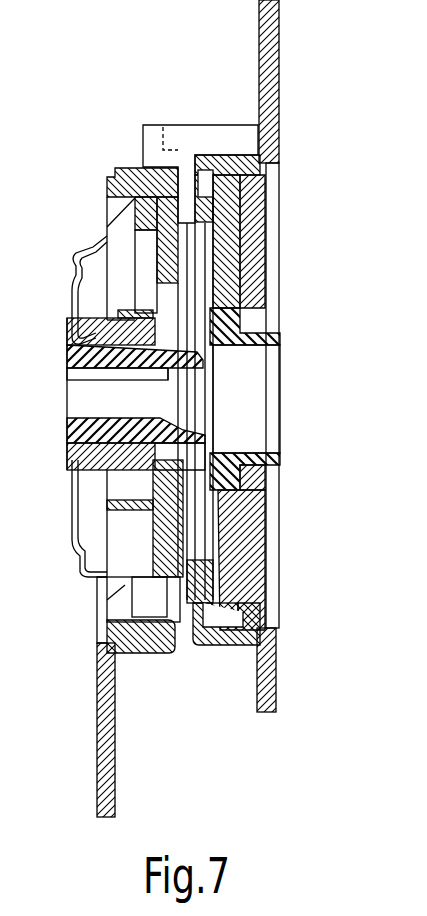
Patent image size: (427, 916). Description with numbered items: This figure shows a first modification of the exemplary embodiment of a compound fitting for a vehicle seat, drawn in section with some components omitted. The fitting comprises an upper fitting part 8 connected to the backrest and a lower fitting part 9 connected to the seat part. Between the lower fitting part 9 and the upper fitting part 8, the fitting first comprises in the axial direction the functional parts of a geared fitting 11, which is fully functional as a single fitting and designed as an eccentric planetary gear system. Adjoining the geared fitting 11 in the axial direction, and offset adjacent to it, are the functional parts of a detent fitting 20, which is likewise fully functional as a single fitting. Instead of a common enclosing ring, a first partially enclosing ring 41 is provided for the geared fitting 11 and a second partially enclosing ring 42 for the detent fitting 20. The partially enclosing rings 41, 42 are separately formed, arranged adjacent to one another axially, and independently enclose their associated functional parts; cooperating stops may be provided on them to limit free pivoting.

The upper fitting part 8 is at (271, 77).
The lower fitting part 9 is at (107, 735).
The geared fitting 11 is at (90, 226).
The detent fitting 20 is at (219, 655).
The first partially enclosing ring 41 is at (130, 168).
The second partially enclosing ring 42 is at (228, 166).